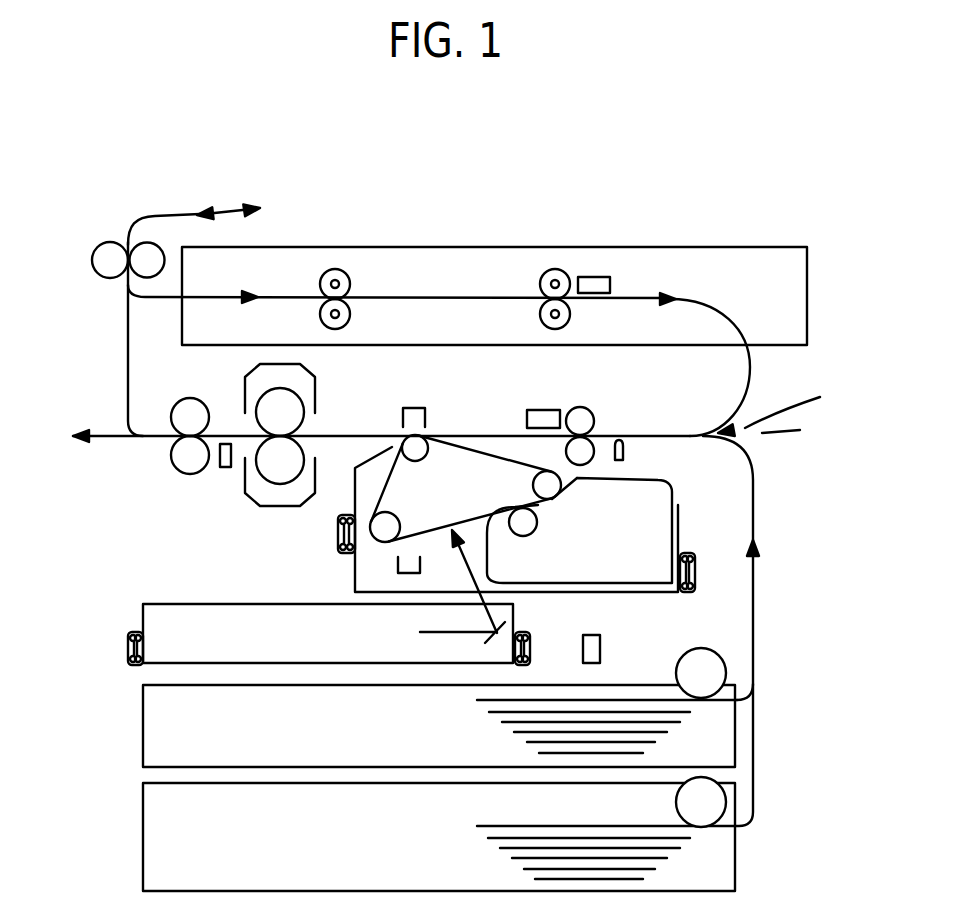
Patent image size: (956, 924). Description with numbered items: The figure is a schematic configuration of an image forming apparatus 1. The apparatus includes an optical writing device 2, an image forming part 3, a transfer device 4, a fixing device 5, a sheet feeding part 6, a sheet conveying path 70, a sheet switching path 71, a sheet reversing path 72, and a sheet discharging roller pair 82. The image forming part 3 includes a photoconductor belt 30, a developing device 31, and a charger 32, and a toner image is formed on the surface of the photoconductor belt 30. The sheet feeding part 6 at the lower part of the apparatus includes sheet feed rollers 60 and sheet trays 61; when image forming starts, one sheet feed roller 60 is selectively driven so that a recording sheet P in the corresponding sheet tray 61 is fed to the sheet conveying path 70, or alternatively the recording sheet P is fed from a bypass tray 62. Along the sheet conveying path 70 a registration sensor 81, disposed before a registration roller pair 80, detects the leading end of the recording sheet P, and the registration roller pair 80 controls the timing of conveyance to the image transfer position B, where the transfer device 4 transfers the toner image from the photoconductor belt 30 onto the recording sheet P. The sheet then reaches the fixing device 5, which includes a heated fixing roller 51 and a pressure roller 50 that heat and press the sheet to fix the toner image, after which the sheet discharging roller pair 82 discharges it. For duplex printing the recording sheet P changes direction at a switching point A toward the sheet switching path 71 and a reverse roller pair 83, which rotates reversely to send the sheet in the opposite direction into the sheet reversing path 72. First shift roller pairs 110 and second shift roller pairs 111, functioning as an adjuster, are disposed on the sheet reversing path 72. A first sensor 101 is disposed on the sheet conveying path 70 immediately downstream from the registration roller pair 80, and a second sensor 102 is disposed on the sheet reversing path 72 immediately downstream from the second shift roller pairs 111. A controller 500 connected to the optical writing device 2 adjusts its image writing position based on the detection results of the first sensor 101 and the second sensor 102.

The image forming apparatus 1 is at (760, 164).
The optical writing device 2 is at (531, 648).
The image forming part 3 is at (521, 494).
The transfer device 4 is at (412, 406).
The fixing device 5 is at (278, 453).
The sheet feeding part 6 is at (499, 750).
The photoconductor belt 30 is at (383, 475).
The developing device 31 is at (673, 519).
The charger 32 is at (398, 565).
The pressure roller 50 is at (257, 403).
The fixing roller 51 is at (280, 484).
The sheet feed roller 60 is at (676, 801).
The sheet tray 61 is at (735, 858).
The bypass tray 62 is at (782, 433).
The sheet conveying path 70 is at (754, 594).
The sheet switching path 71 is at (128, 346).
The sheet reversing path 72 is at (494, 277).
The registration roller pair 80 is at (588, 408).
The registration sensor 81 is at (623, 453).
The sheet discharging roller pair 82 is at (190, 474).
The reverse roller pair 83 is at (92, 259).
The first sensor 101 is at (541, 410).
The second sensor 102 is at (598, 277).
The first shift roller pairs 110 is at (335, 268).
The second shift roller pairs 111 is at (555, 268).
The controller 500 is at (592, 634).
The switching point A is at (133, 438).
The image transfer position B is at (426, 438).
The recording sheet P is at (630, 698).